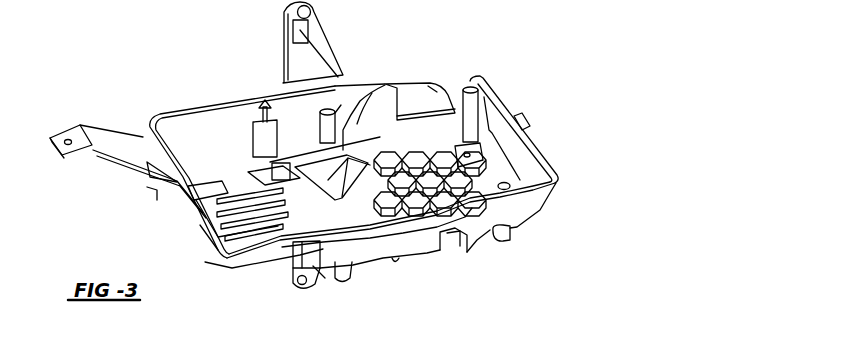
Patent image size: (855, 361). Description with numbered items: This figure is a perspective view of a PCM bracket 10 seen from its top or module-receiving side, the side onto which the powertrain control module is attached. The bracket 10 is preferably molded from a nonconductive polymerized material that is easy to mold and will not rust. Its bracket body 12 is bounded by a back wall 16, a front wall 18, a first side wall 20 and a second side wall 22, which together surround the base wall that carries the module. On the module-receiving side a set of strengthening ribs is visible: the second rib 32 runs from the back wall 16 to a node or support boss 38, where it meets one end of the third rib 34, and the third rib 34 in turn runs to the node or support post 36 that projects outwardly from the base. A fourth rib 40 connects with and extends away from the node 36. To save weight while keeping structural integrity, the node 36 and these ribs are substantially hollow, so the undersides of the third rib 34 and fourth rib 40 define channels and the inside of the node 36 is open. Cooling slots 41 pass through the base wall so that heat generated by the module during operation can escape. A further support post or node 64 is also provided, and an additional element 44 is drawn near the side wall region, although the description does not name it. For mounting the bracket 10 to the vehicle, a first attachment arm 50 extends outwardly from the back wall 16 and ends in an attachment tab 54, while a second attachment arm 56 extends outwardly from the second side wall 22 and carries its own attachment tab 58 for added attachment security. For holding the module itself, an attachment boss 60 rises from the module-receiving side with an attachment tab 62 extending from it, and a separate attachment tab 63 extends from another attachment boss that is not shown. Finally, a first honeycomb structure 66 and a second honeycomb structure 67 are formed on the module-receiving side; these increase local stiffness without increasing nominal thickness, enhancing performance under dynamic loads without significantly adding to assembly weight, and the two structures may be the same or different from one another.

The bracket 10 is at (559, 34).
The bracket body 12 is at (257, 266).
The back wall 16 is at (217, 250).
The front wall 18 is at (567, 155).
The first side wall 20 is at (569, 238).
The second side wall 22 is at (182, 113).
The second rib 32 is at (320, 272).
The third rib 34 is at (357, 237).
The node or support post 36 is at (333, 190).
The node or support boss 38 is at (341, 284).
The fourth rib 40 is at (386, 237).
The cooling slots 41 is at (200, 207).
The cylindrical post 44 is at (447, 95).
The first attachment arm 50 is at (120, 163).
The attachment tab 54 is at (64, 137).
The second attachment arm 56 is at (320, 62).
The attachment tab 58 is at (312, 12).
The attachment boss 60 is at (250, 133).
The attachment tab 62 is at (255, 118).
The attachment tab 63 is at (445, 229).
The support post or node 64 is at (360, 101).
The first honeycomb structure 66 is at (470, 200).
The second honeycomb structure 67 is at (225, 262).